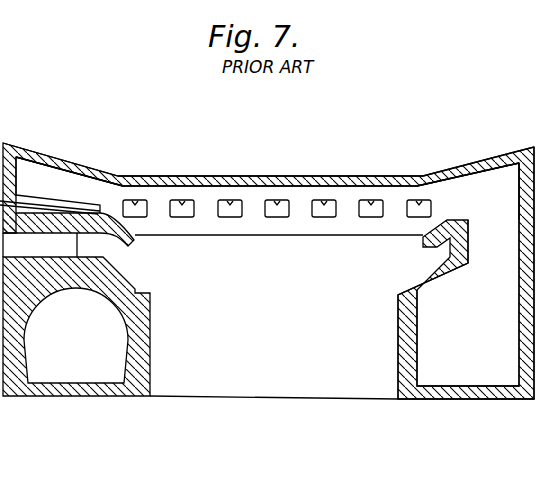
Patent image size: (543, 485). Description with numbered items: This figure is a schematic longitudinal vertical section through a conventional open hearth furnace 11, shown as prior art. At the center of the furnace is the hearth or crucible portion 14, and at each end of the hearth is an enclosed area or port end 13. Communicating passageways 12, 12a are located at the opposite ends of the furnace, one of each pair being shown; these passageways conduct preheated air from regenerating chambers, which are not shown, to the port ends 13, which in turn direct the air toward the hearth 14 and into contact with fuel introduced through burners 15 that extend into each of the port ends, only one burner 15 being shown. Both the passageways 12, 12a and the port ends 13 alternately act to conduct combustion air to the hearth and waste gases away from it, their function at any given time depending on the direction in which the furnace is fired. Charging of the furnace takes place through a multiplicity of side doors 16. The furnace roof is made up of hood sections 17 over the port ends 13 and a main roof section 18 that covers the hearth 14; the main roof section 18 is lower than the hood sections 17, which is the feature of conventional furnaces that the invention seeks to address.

The open hearth furnace 11 is at (163, 175).
The communicating passageway 12 is at (473, 353).
The communicating passageway 12a is at (92, 360).
The port end 13 is at (43, 180).
The hearth 14 is at (241, 230).
The burner 15 is at (75, 208).
The side doors 16 is at (229, 201).
The hood section 17 is at (67, 158).
The main roof section 18 is at (245, 176).